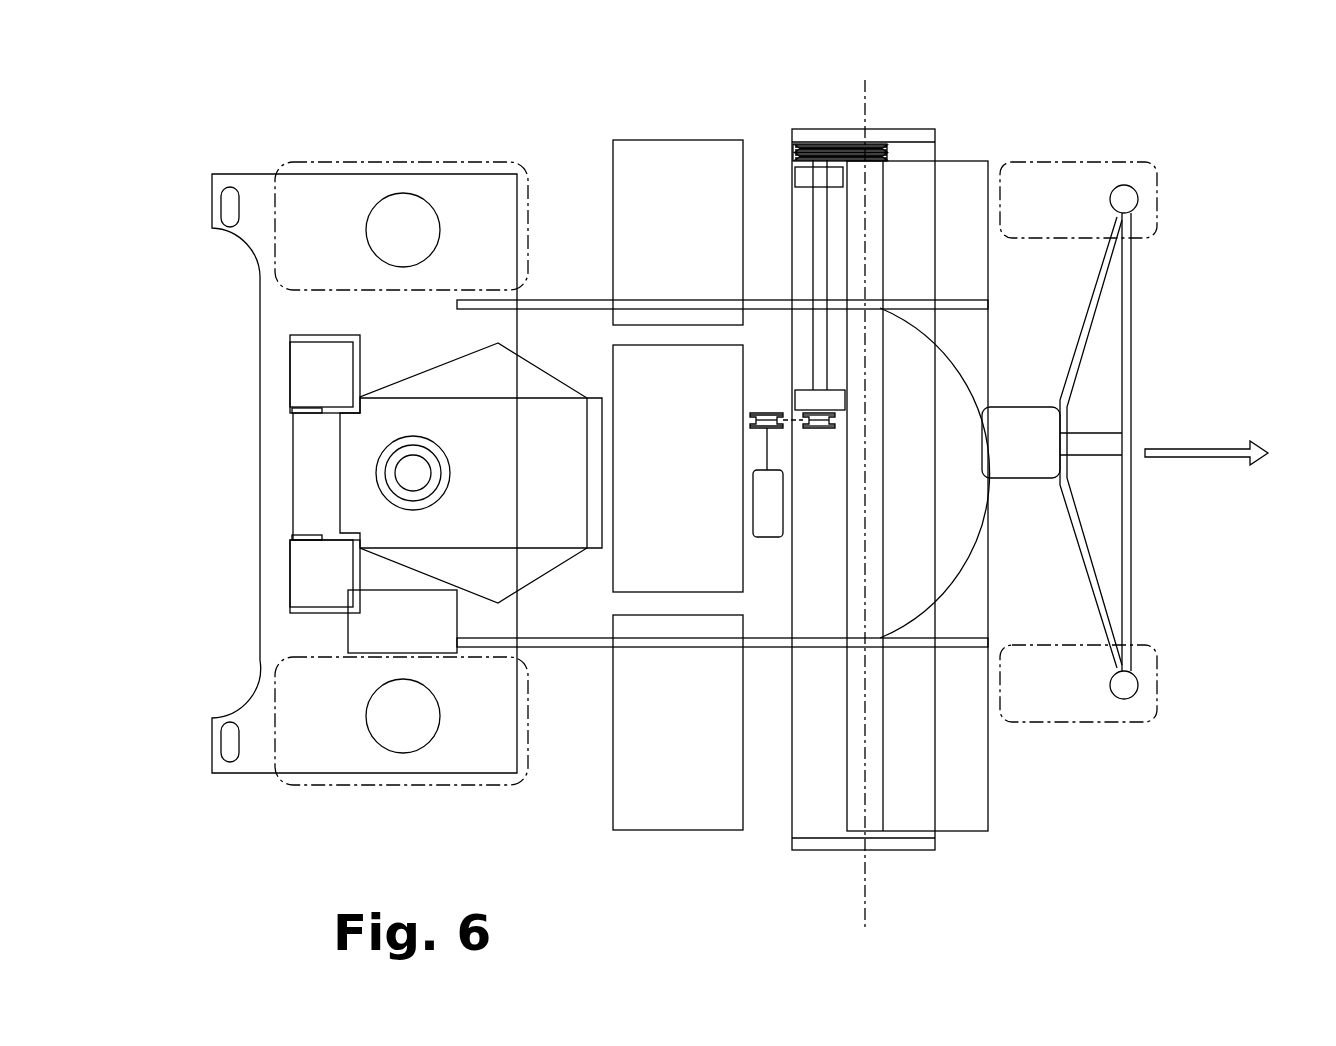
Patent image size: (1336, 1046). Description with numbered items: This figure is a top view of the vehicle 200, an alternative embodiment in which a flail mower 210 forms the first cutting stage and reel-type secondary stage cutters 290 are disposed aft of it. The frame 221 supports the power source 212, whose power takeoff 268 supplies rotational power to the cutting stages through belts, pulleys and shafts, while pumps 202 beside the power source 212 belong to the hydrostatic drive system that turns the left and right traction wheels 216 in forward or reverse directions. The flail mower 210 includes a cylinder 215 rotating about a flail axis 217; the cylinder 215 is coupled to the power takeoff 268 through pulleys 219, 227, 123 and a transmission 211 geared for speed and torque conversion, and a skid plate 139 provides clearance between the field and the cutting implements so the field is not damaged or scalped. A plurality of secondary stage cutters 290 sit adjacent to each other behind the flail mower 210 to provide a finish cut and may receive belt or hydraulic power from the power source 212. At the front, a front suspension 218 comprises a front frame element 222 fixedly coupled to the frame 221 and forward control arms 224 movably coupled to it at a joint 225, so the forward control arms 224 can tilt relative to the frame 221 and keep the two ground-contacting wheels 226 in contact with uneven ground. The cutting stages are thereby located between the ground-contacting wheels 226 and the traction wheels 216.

The vehicle 200 is at (170, 146).
The traction wheels 216 is at (345, 162).
The frame 221 is at (567, 300).
The power source 212 is at (413, 377).
The power takeoff 268 is at (400, 488).
The pump 202 is at (332, 538).
The secondary stage cutters 290 is at (613, 233).
The flail mower 210 is at (835, 852).
The skid plate 139 is at (792, 142).
The pulley 123 is at (878, 145).
The cylinder 215 is at (935, 755).
The flail axis 217 is at (867, 903).
The front frame element 222 is at (1030, 565).
The pulley 219 is at (766, 413).
The pulley 227 is at (820, 428).
The transmission 211 is at (770, 537).
The joint 225 is at (1017, 407).
The forward control arms 224 is at (1131, 295).
The ground-contacting wheels 226 is at (1090, 162).
The front suspension 218 is at (1150, 410).